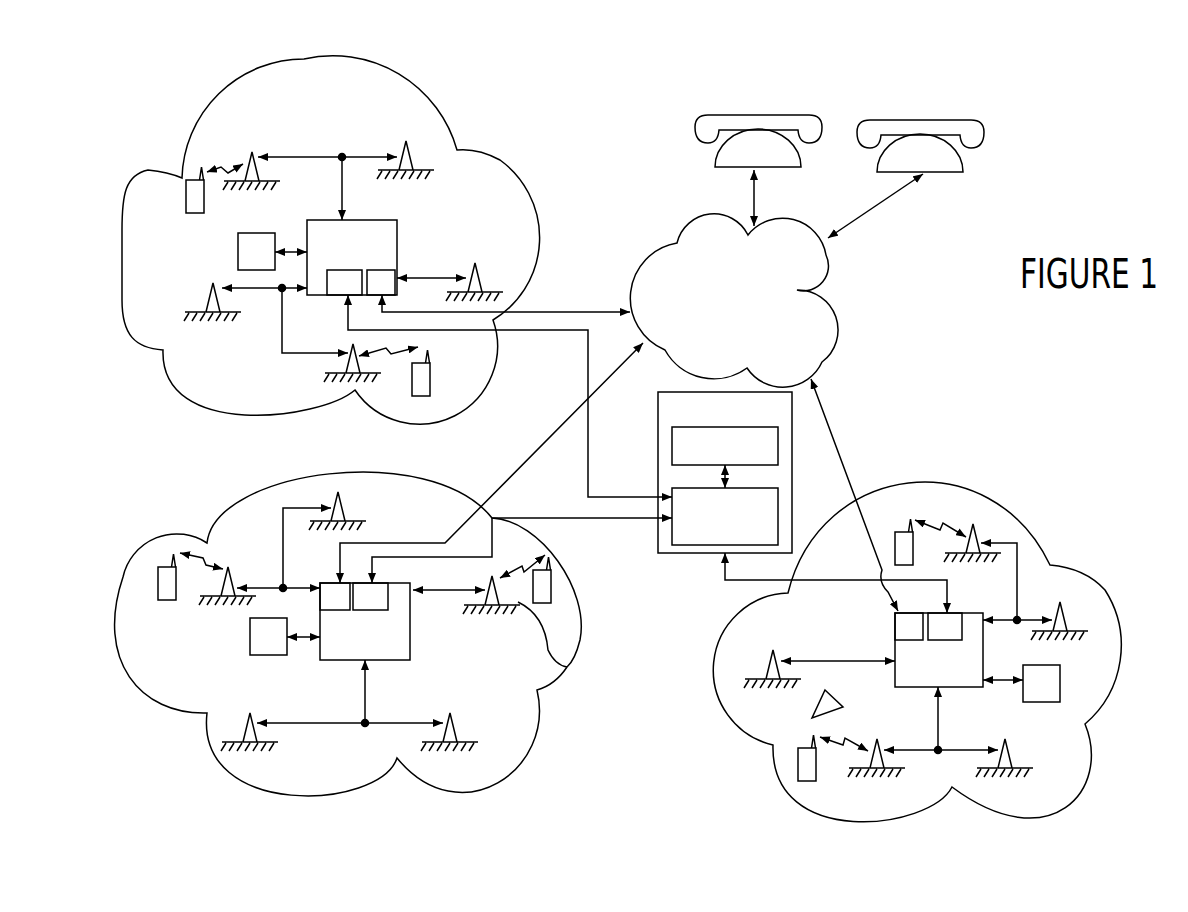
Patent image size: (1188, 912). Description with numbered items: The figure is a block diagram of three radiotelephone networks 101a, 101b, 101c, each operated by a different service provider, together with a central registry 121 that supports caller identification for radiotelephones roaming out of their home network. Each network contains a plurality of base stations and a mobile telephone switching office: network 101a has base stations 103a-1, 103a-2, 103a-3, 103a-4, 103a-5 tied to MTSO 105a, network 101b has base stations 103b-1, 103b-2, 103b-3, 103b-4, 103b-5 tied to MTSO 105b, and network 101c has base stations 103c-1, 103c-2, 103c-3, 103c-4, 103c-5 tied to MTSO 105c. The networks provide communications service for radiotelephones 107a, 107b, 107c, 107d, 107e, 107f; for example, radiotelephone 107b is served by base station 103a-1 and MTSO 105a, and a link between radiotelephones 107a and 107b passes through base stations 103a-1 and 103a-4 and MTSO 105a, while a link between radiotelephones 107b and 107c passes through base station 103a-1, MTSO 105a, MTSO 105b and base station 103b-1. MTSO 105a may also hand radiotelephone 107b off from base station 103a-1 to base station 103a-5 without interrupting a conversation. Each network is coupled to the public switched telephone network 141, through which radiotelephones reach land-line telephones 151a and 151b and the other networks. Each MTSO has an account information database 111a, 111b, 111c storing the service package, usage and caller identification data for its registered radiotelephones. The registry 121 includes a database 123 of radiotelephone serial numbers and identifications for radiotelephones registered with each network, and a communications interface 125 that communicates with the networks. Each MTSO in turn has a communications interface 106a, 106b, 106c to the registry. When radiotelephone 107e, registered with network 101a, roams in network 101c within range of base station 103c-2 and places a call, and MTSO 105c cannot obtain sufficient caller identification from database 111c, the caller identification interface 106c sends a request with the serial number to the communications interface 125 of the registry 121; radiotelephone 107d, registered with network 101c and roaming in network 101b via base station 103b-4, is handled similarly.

The radiotelephone network 101a is at (392, 72).
The radiotelephone network 101b is at (123, 590).
The radiotelephone network 101c is at (1017, 523).
The base station 103a-1 is at (240, 158).
The base station 103a-2 is at (450, 150).
The base station 103a-3 is at (480, 272).
The base station 103a-4 is at (345, 362).
The base station 103a-5 is at (210, 305).
The base station 103b-1 is at (228, 566).
The base station 103b-2 is at (242, 726).
The base station 103b-3 is at (460, 725).
The base station 103b-4 is at (567, 667).
The base station 103b-5 is at (345, 503).
The base station 103c-1 is at (772, 655).
The base station 103c-2 is at (953, 787).
The base station 103c-3 is at (1085, 727).
The base station 103c-4 is at (1060, 606).
The base station 103c-5 is at (978, 530).
The mobile telephone switching office 105a is at (397, 238).
The mobile telephone switching office 105b is at (410, 637).
The mobile telephone switching office 105c is at (893, 645).
The communications interface 106a is at (345, 296).
The communications interface 106b is at (362, 583).
The caller identification interface 106c is at (957, 612).
The radiotelephone 107a is at (430, 380).
The radiotelephone 107b is at (186, 197).
The radiotelephone 107c is at (157, 582).
The radiotelephone 107d is at (552, 590).
The radiotelephone 107e is at (798, 760).
The radiotelephone 107f is at (895, 540).
The account information database 111a is at (238, 247).
The account information database 111b is at (250, 623).
The account information database 111c is at (1047, 702).
The registry 121 is at (658, 450).
The database 123 is at (778, 433).
The communications interface 125 is at (778, 528).
The public switched telephone network 141 is at (833, 248).
The land-line telephone 151a is at (780, 115).
The land-line telephone 151b is at (940, 172).